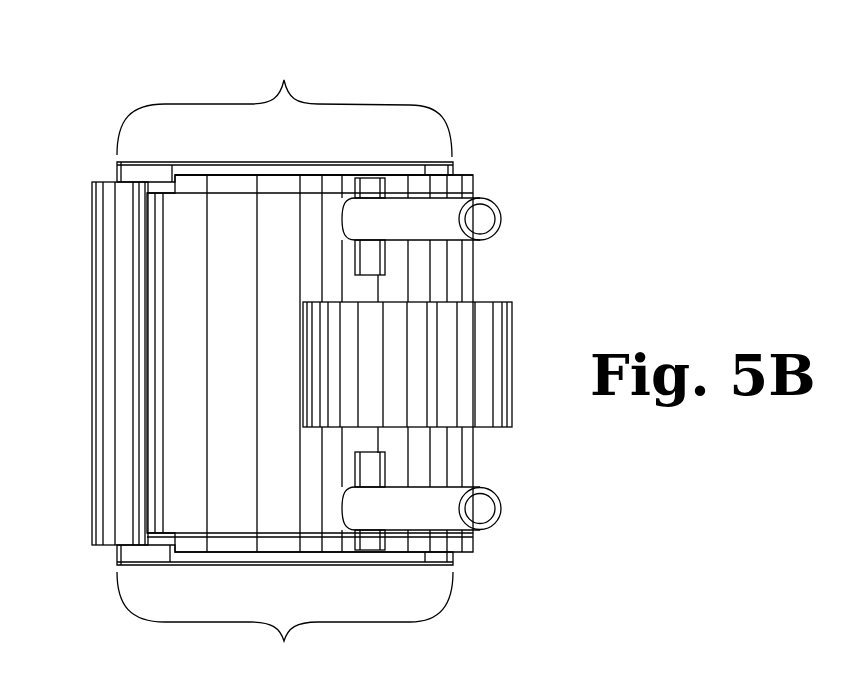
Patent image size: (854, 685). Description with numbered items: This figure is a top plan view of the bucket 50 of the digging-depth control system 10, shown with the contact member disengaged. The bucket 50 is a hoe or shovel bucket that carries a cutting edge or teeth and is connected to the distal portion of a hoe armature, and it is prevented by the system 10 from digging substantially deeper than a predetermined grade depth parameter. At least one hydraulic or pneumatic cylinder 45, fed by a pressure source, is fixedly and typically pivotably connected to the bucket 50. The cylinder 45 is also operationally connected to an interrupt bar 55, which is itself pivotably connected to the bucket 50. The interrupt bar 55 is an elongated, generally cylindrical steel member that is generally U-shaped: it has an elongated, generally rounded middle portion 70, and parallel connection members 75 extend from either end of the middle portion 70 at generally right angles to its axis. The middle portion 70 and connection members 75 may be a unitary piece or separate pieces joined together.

The system 10 is at (574, 214).
The hydraulic cylinder 45 is at (441, 230).
The bucket 50 is at (242, 360).
The interrupt bar 55 is at (285, 362).
The middle portion 70 is at (106, 417).
The connection members 75 is at (273, 162).